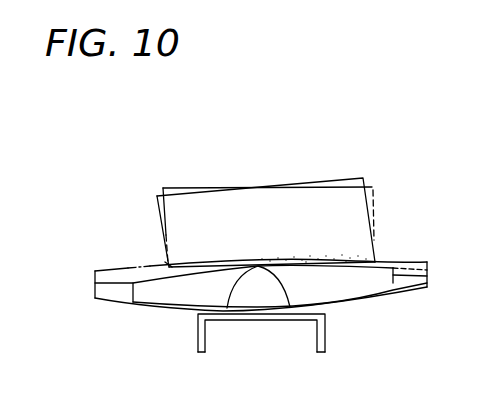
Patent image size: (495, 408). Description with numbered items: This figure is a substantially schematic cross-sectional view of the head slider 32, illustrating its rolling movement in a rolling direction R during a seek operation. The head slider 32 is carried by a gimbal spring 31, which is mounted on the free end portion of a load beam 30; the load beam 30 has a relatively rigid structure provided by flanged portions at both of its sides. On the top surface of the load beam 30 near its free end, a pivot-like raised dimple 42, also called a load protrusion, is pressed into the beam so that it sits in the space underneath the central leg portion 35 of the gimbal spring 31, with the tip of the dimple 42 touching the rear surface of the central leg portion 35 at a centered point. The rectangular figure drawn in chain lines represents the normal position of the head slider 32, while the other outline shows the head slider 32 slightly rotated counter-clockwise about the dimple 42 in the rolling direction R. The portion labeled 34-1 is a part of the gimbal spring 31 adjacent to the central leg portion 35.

The rolling direction R is at (205, 136).
The load beam 30 is at (327, 333).
The gimbal spring 31 is at (396, 264).
The head slider 32 is at (343, 180).
The plate portion 34-1 is at (144, 311).
The central leg portion 35 is at (167, 260).
The dimple 42 is at (258, 290).